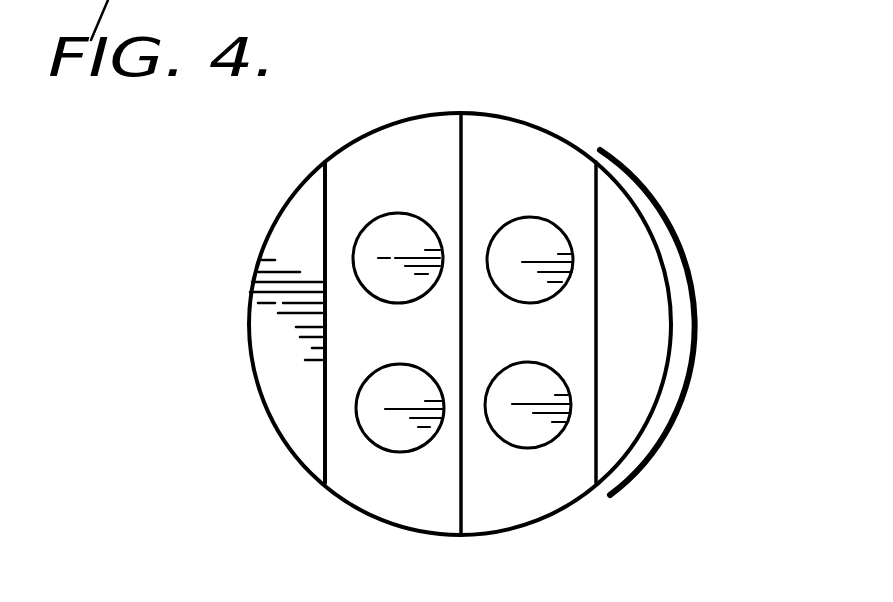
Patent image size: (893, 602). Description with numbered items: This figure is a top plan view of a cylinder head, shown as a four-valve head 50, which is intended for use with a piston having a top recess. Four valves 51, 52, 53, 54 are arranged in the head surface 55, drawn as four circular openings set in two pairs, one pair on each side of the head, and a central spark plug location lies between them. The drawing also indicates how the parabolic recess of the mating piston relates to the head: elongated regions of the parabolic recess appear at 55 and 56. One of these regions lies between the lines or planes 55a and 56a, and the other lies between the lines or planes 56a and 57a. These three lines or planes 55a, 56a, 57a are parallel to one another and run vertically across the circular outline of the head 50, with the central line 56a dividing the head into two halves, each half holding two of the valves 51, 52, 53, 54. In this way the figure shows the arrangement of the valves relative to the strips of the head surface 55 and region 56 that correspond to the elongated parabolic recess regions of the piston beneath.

The four-valve head 50 is at (571, 118).
The valve 51 is at (547, 228).
The valve 52 is at (548, 388).
The valve 53 is at (368, 240).
The valve 54 is at (367, 407).
The head surface 55 is at (255, 382).
The line or plane 55a is at (325, 367).
The parabolic recess elongated region 56 is at (576, 307).
The line or plane 56a is at (459, 137).
The line or plane 57a is at (597, 270).